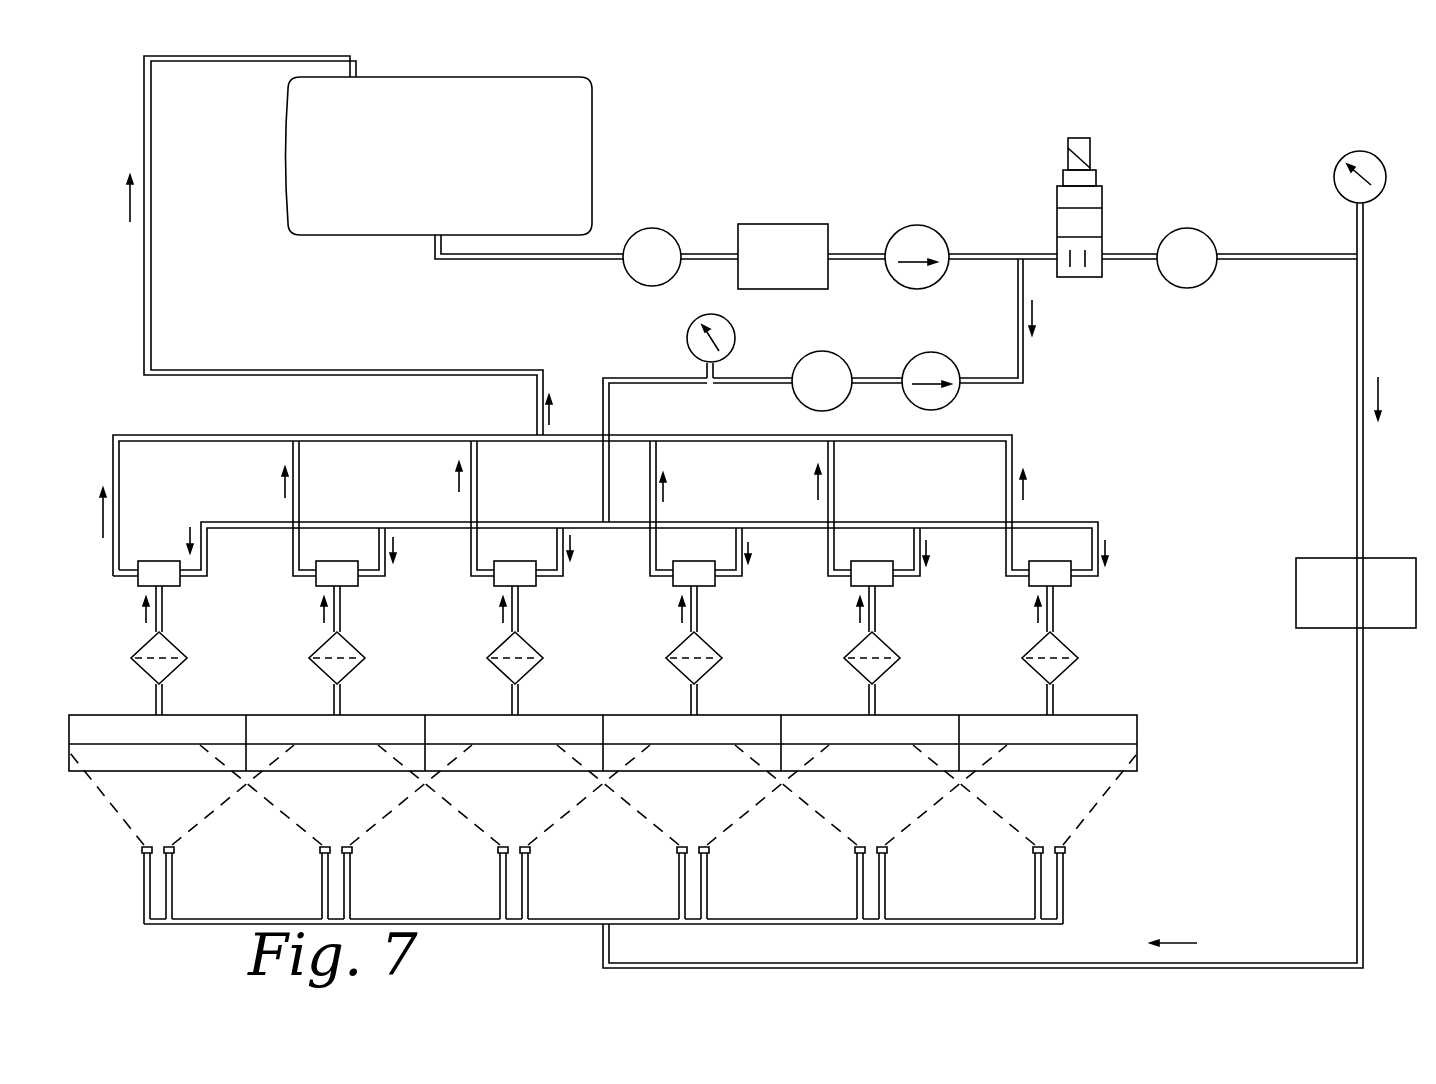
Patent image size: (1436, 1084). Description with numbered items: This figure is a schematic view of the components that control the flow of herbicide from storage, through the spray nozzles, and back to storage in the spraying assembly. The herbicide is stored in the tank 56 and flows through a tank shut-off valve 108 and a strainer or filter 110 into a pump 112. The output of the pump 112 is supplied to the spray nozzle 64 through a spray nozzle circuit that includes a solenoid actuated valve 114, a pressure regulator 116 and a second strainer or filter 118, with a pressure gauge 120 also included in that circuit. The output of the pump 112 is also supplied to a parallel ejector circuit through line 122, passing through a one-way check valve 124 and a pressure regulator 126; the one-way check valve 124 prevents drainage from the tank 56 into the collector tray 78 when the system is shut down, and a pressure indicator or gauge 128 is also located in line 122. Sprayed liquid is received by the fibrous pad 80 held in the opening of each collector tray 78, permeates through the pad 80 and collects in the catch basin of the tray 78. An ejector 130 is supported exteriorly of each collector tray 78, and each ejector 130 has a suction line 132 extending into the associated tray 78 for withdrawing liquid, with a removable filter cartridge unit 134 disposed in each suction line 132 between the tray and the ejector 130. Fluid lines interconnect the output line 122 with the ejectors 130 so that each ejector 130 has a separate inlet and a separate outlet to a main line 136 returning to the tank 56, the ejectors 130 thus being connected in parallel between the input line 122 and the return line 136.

The tank 56 is at (337, 213).
The spray nozzle 64 is at (163, 847).
The collector tray 78 is at (197, 721).
The fibrous pad 80 is at (172, 757).
The tank shut-off valve 108 is at (652, 237).
The strainer or filter 110 is at (770, 233).
The pump 112 is at (890, 240).
The solenoid actuated valve 114 is at (1105, 226).
The pressure regulator 116 is at (1198, 272).
The second strainer or filter 118 is at (1322, 572).
The pressure gauge 120 is at (1357, 160).
The line 122 is at (1022, 355).
The one-way check valve 124 is at (945, 368).
The pressure regulator 126 is at (830, 365).
The pressure indicator or gauge 128 is at (692, 331).
The ejector 130 is at (153, 563).
The suction line 132 is at (155, 695).
The removable filter cartridge unit 134 is at (172, 643).
The main line 136 is at (255, 372).